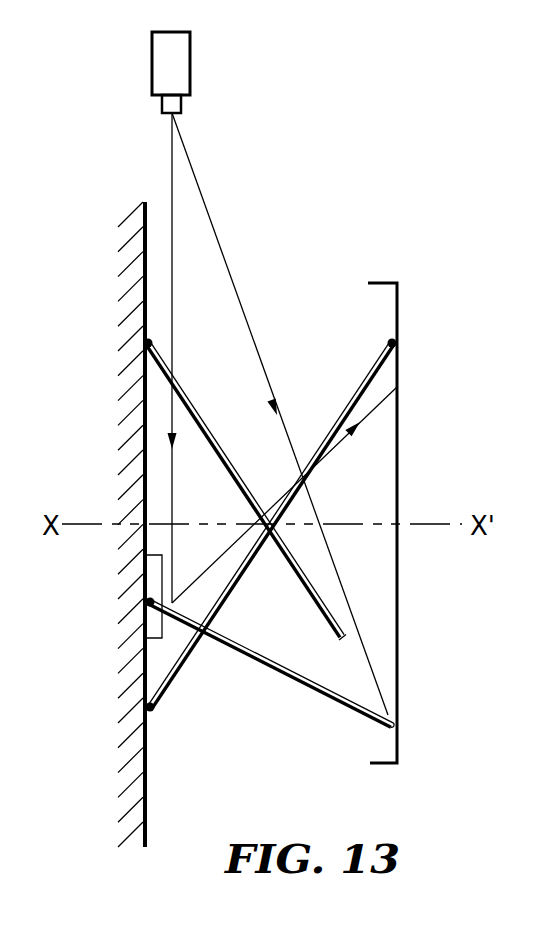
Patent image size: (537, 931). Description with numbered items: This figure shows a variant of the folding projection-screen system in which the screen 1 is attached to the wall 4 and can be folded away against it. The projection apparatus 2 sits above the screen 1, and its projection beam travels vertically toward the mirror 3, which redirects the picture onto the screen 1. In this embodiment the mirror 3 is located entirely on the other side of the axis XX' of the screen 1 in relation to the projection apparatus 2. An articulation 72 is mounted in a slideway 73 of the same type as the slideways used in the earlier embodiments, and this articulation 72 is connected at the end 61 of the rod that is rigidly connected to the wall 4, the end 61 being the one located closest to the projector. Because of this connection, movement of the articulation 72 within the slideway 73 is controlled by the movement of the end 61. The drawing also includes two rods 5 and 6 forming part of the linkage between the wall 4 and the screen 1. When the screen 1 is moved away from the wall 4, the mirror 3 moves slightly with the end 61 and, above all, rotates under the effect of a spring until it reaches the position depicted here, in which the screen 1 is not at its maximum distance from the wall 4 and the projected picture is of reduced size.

The screen 1 is at (400, 596).
The projection apparatus 2 is at (187, 62).
The mirror 3 is at (327, 693).
The wall 4 is at (146, 768).
The mirror 5 is at (182, 667).
The mirror 6 is at (197, 410).
The end 61 is at (148, 343).
The articulation 72 is at (145, 624).
The slideway 73 is at (150, 572).